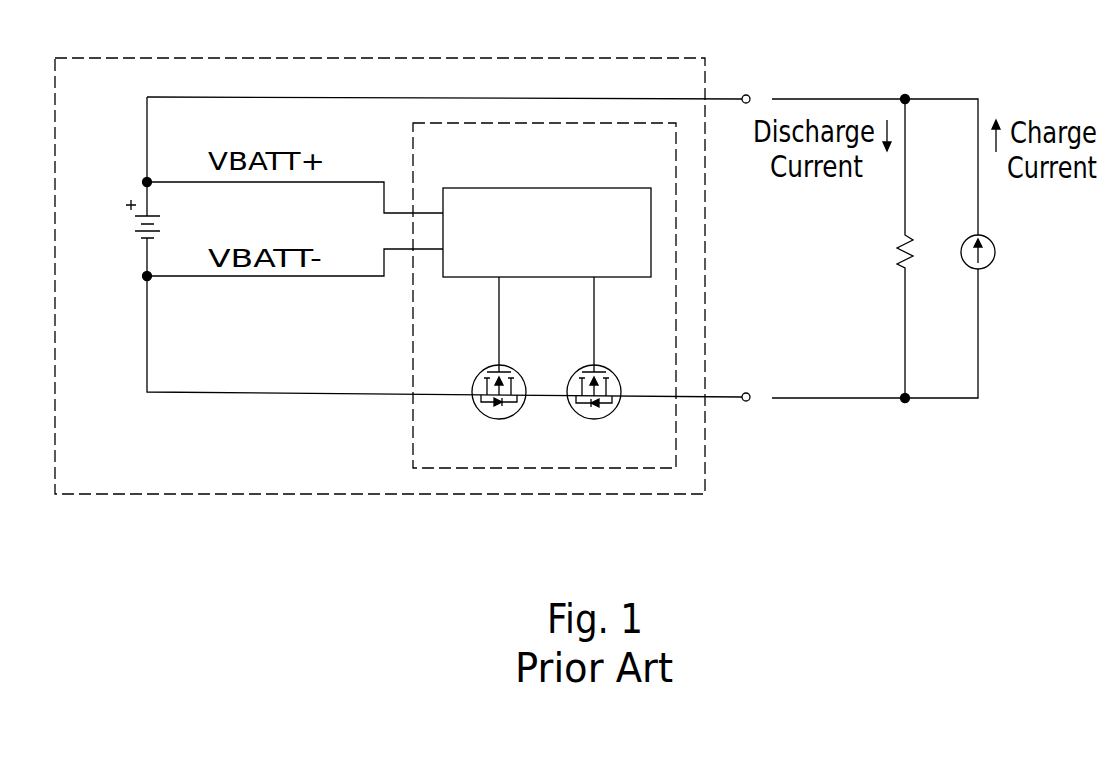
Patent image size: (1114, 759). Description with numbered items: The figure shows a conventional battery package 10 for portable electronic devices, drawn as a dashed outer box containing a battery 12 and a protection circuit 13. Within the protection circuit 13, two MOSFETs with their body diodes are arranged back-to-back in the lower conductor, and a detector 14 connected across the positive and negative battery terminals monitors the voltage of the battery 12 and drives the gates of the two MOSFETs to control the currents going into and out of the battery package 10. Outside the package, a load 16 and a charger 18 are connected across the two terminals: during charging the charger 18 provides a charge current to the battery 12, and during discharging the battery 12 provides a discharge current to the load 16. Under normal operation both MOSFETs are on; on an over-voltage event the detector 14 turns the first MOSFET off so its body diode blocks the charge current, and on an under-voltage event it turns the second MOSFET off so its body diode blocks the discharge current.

The battery package 10 is at (382, 58).
The battery 12 is at (120, 223).
The protection circuit 13 is at (413, 326).
The detector 14 is at (543, 188).
The load 16 is at (887, 274).
The charger 18 is at (997, 248).